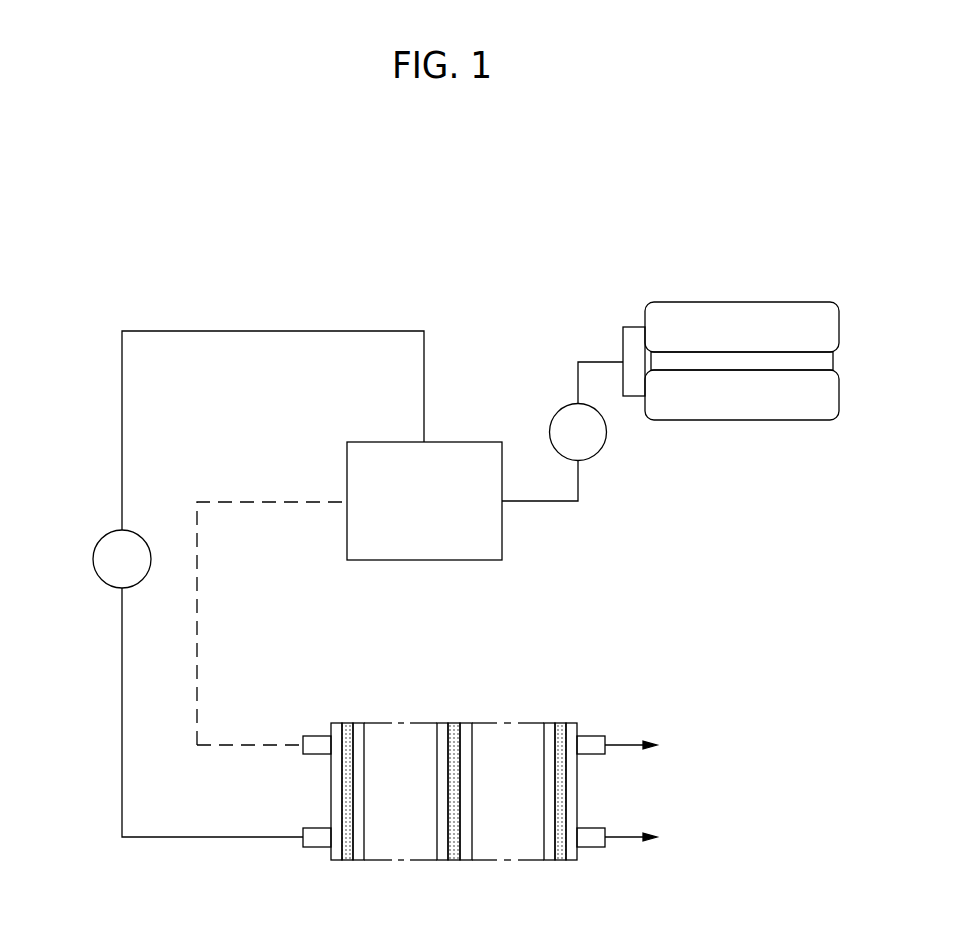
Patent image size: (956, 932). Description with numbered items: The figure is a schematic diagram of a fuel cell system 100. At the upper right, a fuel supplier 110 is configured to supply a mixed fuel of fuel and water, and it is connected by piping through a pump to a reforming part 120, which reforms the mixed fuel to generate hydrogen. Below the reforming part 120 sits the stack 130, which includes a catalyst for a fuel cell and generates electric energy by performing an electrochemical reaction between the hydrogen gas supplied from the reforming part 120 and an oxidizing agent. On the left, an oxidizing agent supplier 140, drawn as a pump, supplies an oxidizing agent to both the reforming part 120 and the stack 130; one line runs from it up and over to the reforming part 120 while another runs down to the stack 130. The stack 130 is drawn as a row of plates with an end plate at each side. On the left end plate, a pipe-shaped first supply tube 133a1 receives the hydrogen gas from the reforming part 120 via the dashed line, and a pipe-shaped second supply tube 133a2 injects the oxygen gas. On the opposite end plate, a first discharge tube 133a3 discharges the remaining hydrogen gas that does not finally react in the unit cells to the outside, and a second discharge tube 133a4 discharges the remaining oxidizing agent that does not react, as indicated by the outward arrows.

The fuel cell system 100 is at (463, 202).
The fuel supplier 110 is at (610, 294).
The reforming part 120 is at (365, 427).
The stack 130 is at (362, 681).
The first supply tube 133a1 is at (310, 735).
The second supply tube 133a2 is at (310, 848).
The first discharge tube 133a3 is at (598, 848).
The second discharge tube 133a4 is at (598, 735).
The oxidizing agent supplier 140 is at (92, 506).